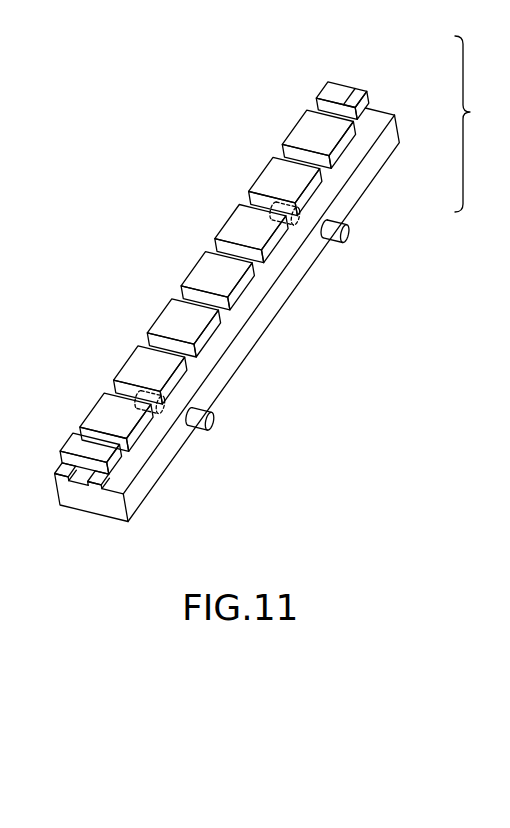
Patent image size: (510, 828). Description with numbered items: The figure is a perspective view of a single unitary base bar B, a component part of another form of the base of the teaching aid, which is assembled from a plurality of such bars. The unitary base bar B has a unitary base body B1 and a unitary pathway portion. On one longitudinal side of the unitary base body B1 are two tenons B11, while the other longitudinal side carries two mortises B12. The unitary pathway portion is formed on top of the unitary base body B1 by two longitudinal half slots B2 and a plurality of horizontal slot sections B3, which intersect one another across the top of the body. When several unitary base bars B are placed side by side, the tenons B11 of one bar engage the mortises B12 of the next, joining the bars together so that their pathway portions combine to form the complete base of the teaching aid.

The unitary base bar B is at (478, 124).
The unitary base body B1 is at (371, 173).
The longitudinal half slot B2 is at (377, 121).
The horizontal slot section B3 is at (357, 84).
The tenon B11 is at (348, 231).
The mortise B12 is at (278, 213).